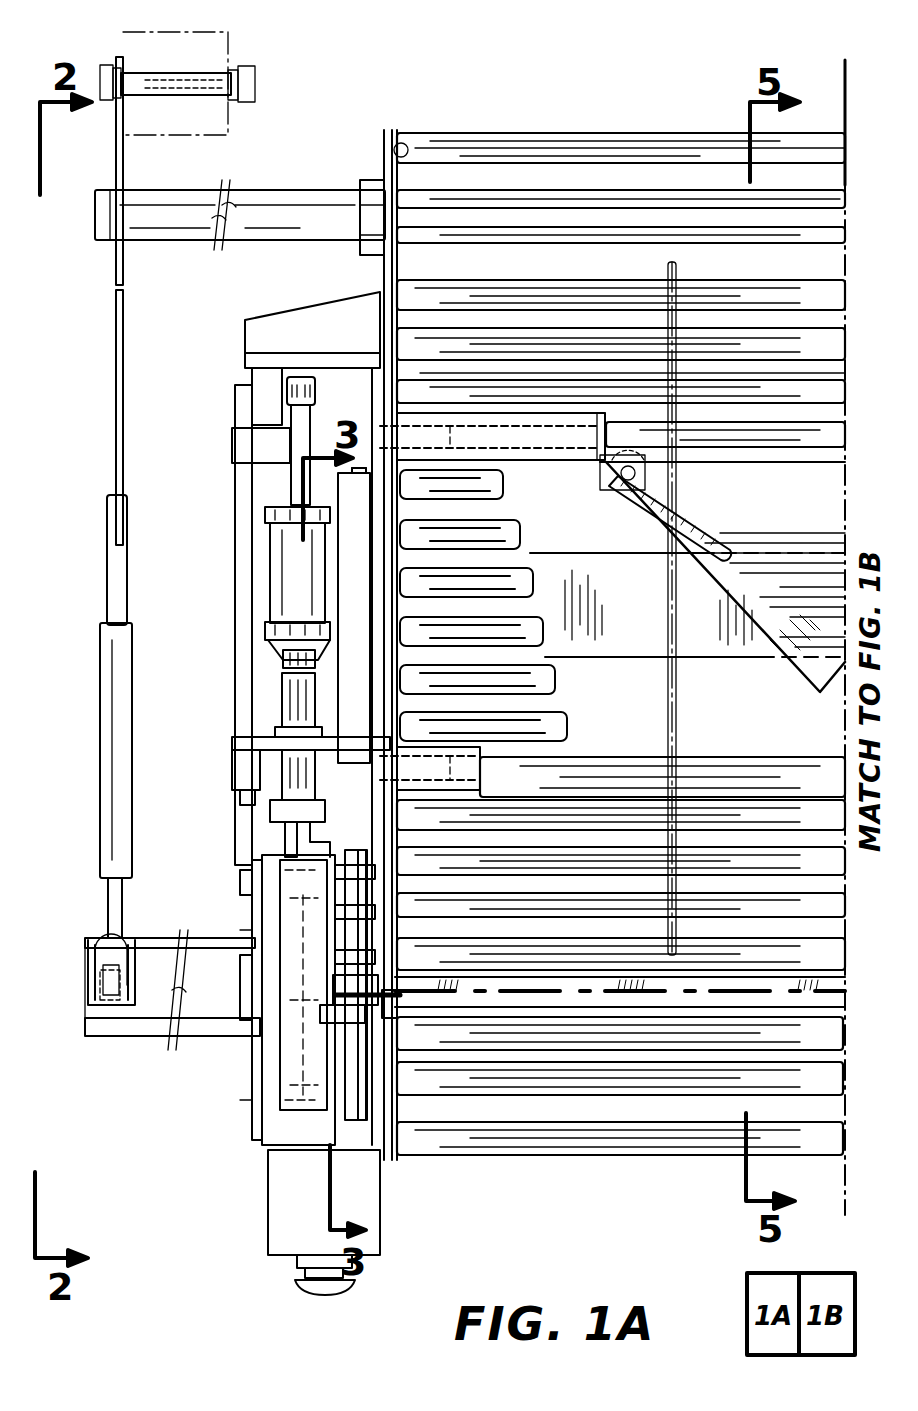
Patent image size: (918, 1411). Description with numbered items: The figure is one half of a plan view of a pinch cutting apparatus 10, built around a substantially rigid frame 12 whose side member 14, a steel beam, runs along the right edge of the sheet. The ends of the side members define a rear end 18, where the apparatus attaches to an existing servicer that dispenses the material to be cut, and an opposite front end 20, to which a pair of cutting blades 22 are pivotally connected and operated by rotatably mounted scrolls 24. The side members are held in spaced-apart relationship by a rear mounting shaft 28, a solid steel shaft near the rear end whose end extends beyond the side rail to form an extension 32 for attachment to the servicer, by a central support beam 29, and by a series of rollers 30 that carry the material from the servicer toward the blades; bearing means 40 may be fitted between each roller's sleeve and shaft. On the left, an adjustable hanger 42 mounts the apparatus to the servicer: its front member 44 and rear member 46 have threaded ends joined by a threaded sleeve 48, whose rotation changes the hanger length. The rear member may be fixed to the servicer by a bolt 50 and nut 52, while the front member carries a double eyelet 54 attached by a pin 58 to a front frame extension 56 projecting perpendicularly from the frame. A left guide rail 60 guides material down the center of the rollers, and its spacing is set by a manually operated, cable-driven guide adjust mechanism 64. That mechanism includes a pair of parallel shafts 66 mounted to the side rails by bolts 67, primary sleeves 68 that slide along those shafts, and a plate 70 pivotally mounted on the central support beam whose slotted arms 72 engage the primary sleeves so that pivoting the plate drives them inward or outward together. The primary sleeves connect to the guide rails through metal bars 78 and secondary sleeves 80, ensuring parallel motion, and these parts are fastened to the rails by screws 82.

The pinch cutting apparatus 10 is at (543, 100).
The frame 12 is at (380, 272).
The side member 14 is at (389, 128).
The rear end 18 is at (365, 157).
The front end 20 is at (257, 1213).
The cutting blades 22 is at (505, 1010).
The scrolls 24 is at (295, 1105).
The rear mounting shaft 28 is at (655, 231).
The central support beam 29 is at (650, 624).
The rollers 30 is at (552, 301).
The extension 32 is at (200, 218).
The bearing means 40 is at (405, 140).
The adjustable hanger 42 is at (125, 346).
The front member 44 is at (116, 905).
The rear member 46 is at (115, 568).
The threaded sleeve 48 is at (120, 735).
The bolt 50 is at (110, 62).
The nut 52 is at (243, 97).
The double eyelet 54 is at (95, 960).
The front frame extension 56 is at (149, 1024).
The pin 58 is at (125, 993).
The left guide rail 60 is at (403, 295).
The guide adjust mechanism 64 is at (781, 525).
The parallel shafts 66 is at (758, 777).
The bolts 67 is at (376, 440).
The primary sleeves 68 is at (528, 460).
The plate 70 is at (788, 620).
The slotted arms 72 is at (700, 507).
The metal bars 78 is at (543, 683).
The secondary sleeves 80 is at (508, 752).
The screws 82 is at (381, 769).